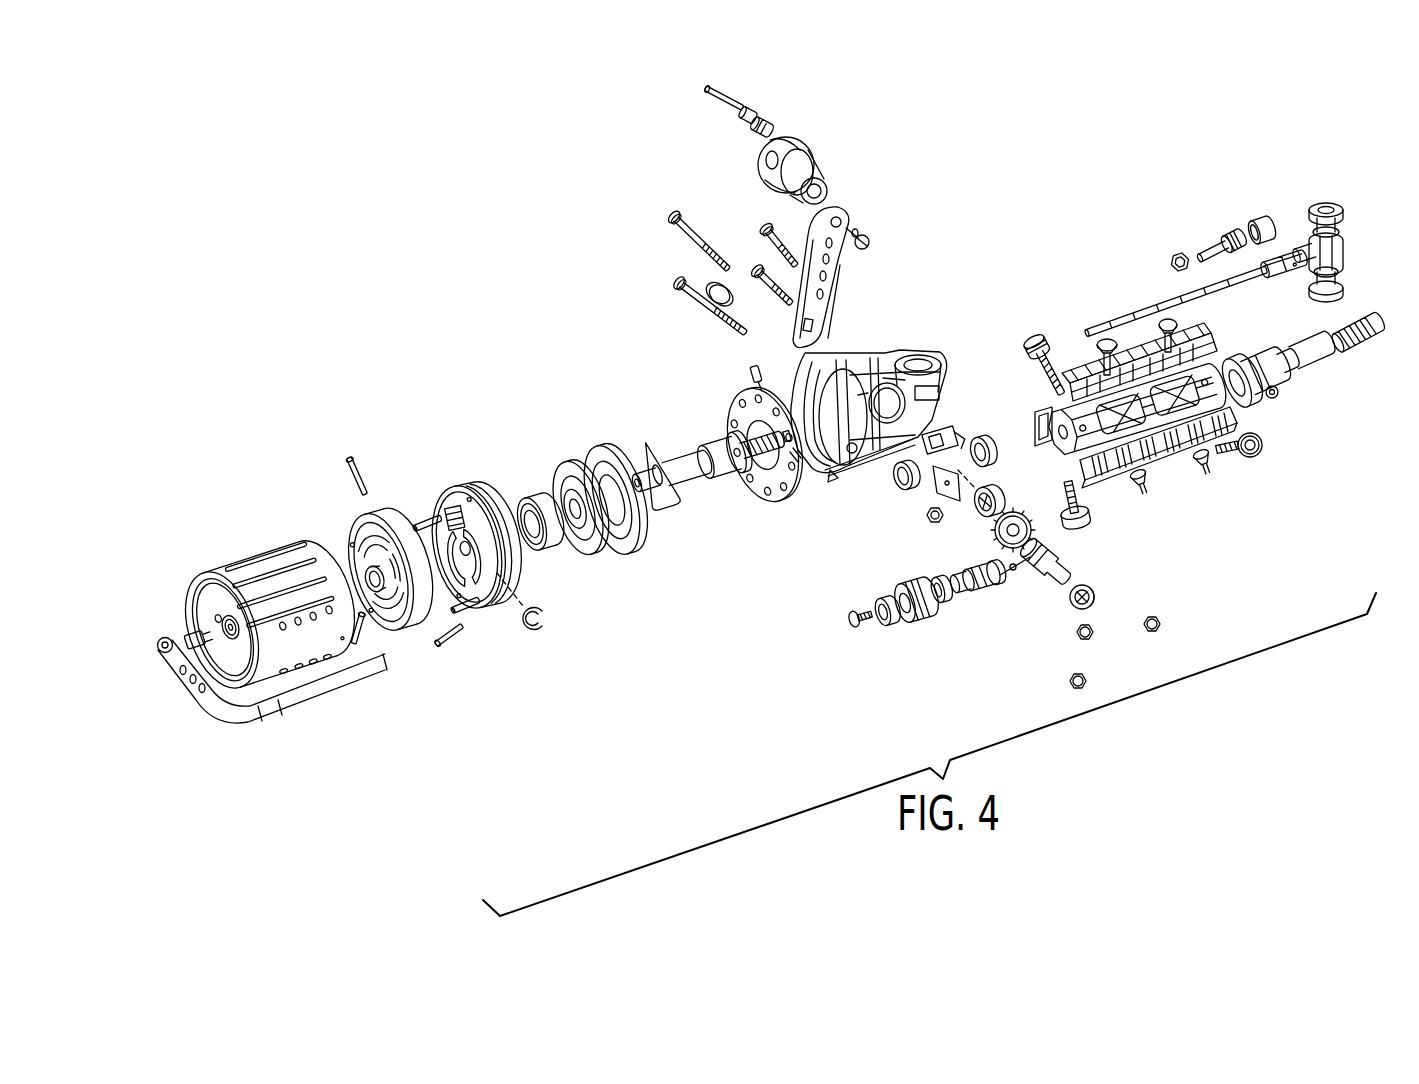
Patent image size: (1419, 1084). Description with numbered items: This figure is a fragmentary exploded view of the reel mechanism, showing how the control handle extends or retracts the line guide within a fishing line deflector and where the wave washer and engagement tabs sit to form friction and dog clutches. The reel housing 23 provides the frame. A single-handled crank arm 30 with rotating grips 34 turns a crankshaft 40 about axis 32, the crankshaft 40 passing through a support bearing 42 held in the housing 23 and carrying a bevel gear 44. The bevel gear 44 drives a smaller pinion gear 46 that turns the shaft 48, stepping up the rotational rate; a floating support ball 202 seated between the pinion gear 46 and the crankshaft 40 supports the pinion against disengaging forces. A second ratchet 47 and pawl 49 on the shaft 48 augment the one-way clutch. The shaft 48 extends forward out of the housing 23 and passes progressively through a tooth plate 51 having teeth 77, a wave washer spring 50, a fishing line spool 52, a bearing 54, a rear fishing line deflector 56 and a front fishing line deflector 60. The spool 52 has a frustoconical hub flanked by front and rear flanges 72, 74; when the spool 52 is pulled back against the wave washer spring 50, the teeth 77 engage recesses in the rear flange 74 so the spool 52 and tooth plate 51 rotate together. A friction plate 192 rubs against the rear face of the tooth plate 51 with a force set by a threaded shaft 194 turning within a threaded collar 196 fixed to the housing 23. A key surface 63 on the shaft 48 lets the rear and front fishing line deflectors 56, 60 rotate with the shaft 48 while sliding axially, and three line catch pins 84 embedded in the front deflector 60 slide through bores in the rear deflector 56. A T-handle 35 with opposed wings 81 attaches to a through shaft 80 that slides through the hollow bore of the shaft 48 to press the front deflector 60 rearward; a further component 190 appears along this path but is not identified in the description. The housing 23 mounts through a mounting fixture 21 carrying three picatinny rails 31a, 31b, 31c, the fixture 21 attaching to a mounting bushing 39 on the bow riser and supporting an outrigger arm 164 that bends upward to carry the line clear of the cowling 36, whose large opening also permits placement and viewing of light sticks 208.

The mounting fixture 21 is at (1136, 382).
The reel housing 23 is at (860, 437).
The crank arm 30 is at (826, 270).
The picatinny rail 31a is at (1080, 365).
The picatinny rail 31b is at (1235, 422).
The picatinny rail 31c is at (1045, 402).
The axis 32 is at (768, 278).
The rotating grips 34 is at (815, 145).
The T-handle 35 is at (1339, 220).
The cowling 36 is at (252, 550).
The mounting bushing 39 is at (1318, 345).
The crankshaft 40 is at (1053, 553).
The support bearing 42 is at (988, 490).
The bevel gear 44 is at (1020, 522).
The pinion gear 46 is at (1000, 592).
The second ratchet 47 is at (832, 480).
The shaft 48 is at (924, 620).
The pawl 49 is at (756, 372).
The wave washer spring 50 is at (707, 494).
The tooth plate 51 is at (735, 395).
The fishing line spool 52 is at (594, 503).
The bearing 54 is at (527, 498).
The rear fishing line deflector 56 is at (500, 616).
The front fishing line deflector 60 is at (402, 632).
The key surface 63 is at (660, 505).
The front flange 72 is at (590, 550).
The rear flange 74 is at (632, 550).
The teeth 77 is at (790, 462).
The through shaft 80 is at (1146, 305).
The wings 81 is at (1337, 230).
The line catch pins 84 is at (415, 518).
The outrigger arm 164 is at (245, 722).
The coupling 190 is at (1286, 248).
The friction plate 192 is at (935, 490).
The threaded shaft 194 is at (1227, 240).
The threaded collar 196 is at (1262, 222).
The floating support ball 202 is at (1010, 566).
The light sticks 208 is at (732, 98).